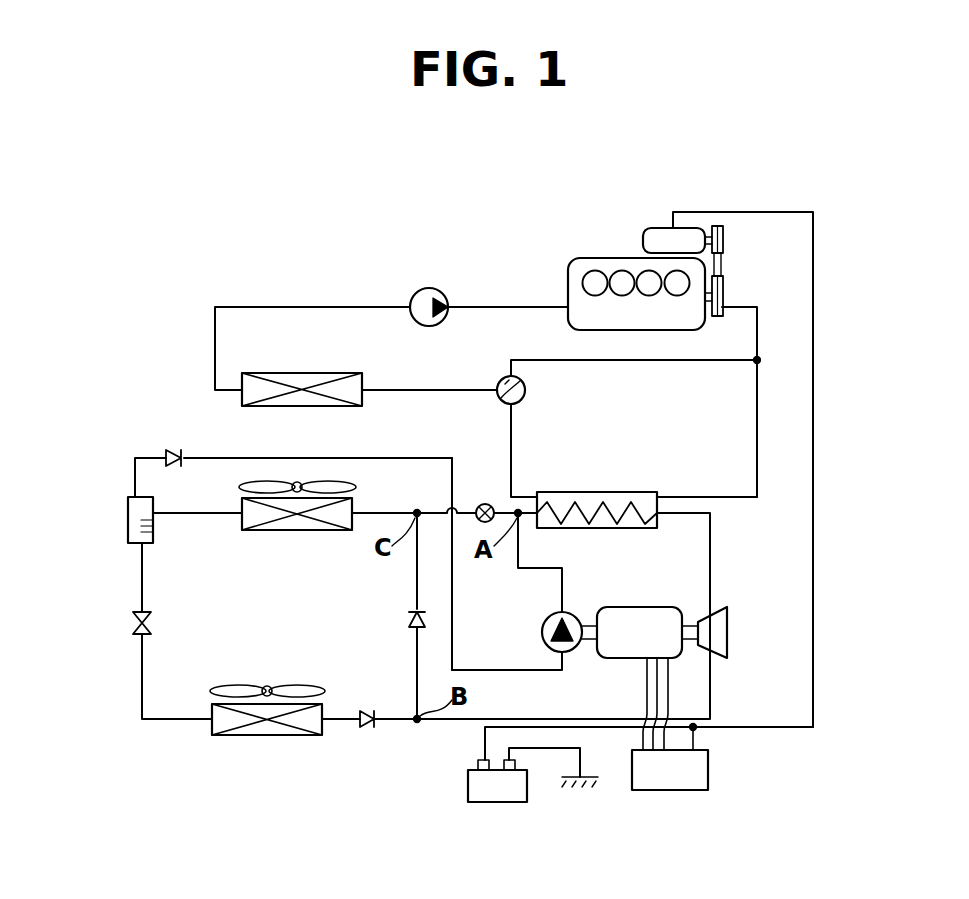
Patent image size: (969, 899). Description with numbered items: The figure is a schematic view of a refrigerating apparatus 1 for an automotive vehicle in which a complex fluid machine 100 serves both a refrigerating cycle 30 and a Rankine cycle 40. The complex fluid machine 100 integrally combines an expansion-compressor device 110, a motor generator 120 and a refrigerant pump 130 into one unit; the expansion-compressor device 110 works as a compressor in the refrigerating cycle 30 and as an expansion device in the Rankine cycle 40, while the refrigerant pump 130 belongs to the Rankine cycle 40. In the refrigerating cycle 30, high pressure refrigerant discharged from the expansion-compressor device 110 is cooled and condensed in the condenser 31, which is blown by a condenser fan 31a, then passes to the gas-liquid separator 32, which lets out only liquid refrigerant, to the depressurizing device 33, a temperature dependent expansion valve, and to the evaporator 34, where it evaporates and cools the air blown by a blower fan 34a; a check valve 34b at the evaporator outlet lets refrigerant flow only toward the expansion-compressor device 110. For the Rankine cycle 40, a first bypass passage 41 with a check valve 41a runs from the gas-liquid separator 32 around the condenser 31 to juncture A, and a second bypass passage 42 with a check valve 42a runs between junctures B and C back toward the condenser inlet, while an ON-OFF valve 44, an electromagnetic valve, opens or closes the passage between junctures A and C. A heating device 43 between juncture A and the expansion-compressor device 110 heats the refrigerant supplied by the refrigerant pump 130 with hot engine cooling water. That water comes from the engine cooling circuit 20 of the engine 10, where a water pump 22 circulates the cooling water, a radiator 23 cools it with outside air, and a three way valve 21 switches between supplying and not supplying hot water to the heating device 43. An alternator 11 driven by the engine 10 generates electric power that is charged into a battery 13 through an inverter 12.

The refrigerating apparatus 1 is at (121, 470).
The engine 10 is at (585, 262).
The alternator 11 is at (662, 232).
The inverter 12 is at (708, 772).
The battery 13 is at (466, 783).
The engine cooling circuit 20 is at (265, 300).
The three way valve 21 is at (527, 388).
The water pump 22 is at (429, 288).
The radiator 23 is at (300, 373).
The refrigerating cycle 30 is at (720, 536).
The condenser 31 is at (290, 530).
The condenser fan 31a is at (240, 488).
The gas-liquid separator 32 is at (153, 535).
The depressurizing device 33 is at (151, 628).
The evaporator 34 is at (282, 735).
The blower fan 34a is at (294, 690).
The check valve 34b is at (368, 712).
The Rankine cycle 40 is at (416, 455).
The first bypass passage 41 is at (395, 460).
The check valve 41a is at (170, 448).
The second bypass passage 42 is at (414, 584).
The check valve 42a is at (410, 622).
The heating device 43 is at (614, 492).
The ON-OFF valve 44 is at (486, 504).
The complex fluid machine 100 is at (679, 603).
The expansion-compressor device 110 is at (735, 616).
The motor generator 120 is at (640, 607).
The refrigerant pump 130 is at (582, 616).